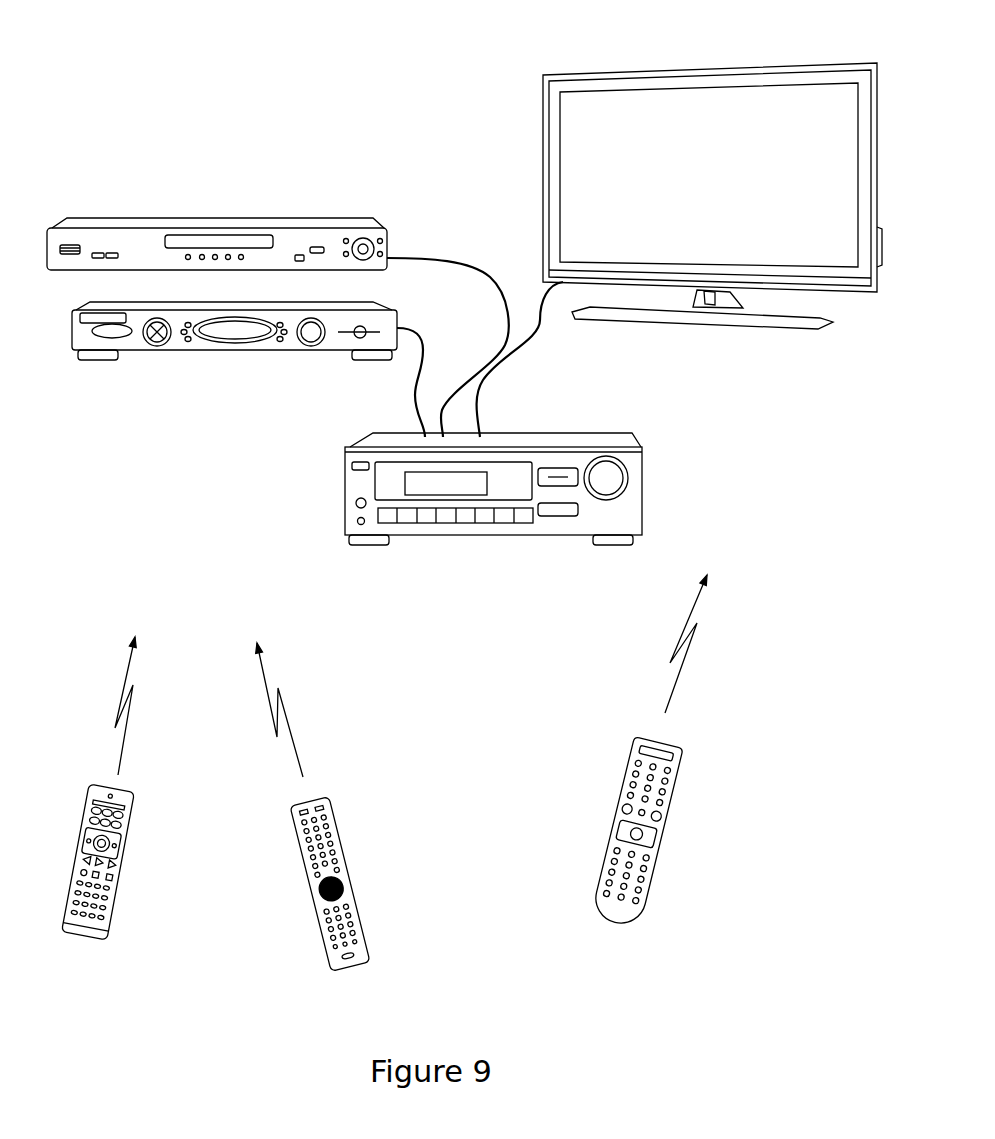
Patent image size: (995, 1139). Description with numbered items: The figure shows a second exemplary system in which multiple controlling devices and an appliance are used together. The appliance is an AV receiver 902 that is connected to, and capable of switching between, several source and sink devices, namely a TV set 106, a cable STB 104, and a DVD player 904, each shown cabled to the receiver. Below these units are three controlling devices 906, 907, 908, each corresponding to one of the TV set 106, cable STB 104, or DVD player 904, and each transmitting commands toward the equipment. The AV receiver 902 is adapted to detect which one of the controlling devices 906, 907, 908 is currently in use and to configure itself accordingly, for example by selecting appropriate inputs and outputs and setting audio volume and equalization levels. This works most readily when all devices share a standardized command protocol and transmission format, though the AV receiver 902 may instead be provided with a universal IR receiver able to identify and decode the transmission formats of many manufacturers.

The TV set 106 is at (627, 70).
The DVD player 904 is at (128, 220).
The cable STB 104 is at (155, 360).
The AV receiver 902 is at (578, 433).
The controlling device 908 is at (122, 887).
The controlling device 906 is at (367, 917).
The controlling device 907 is at (655, 883).